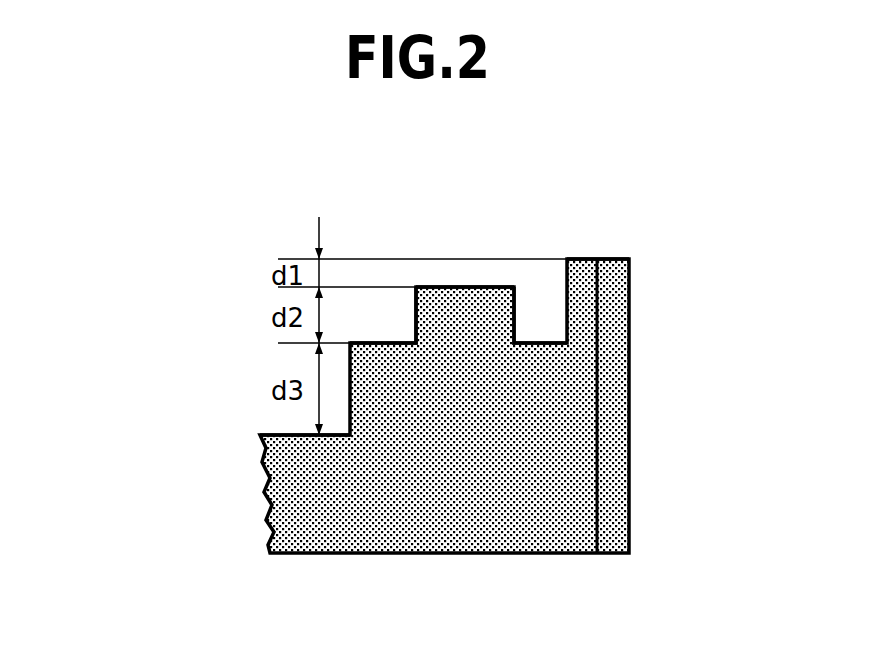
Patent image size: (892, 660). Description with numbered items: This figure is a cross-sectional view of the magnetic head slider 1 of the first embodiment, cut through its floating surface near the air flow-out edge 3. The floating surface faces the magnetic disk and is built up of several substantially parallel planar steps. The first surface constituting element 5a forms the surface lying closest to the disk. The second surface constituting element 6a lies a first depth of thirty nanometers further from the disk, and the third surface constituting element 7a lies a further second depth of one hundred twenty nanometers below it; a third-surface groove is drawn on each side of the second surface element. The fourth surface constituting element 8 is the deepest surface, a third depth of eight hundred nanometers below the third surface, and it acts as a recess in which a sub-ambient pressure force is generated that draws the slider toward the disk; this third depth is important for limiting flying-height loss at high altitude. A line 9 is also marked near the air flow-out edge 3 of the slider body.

The magnetic head slider 1 is at (421, 366).
The air flow-out edge 3 is at (630, 333).
The first surface constituting element 5a is at (587, 258).
The second surface constituting element 6a is at (462, 287).
The third surface constituting element 7a is at (388, 343).
The fourth surface constituting element 8 is at (280, 434).
The boundary line 9 is at (614, 293).